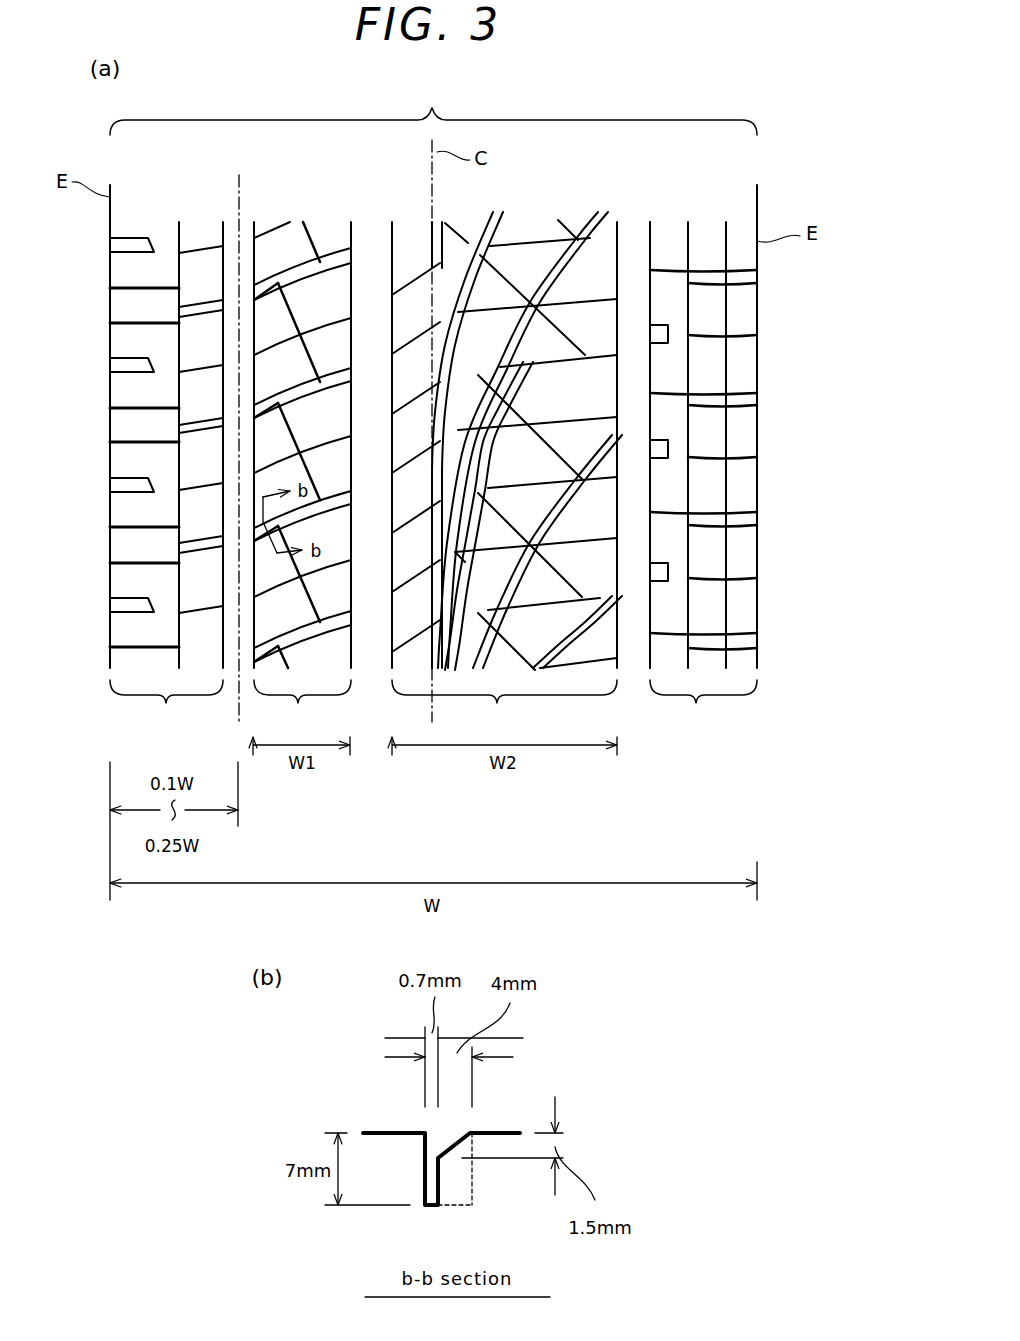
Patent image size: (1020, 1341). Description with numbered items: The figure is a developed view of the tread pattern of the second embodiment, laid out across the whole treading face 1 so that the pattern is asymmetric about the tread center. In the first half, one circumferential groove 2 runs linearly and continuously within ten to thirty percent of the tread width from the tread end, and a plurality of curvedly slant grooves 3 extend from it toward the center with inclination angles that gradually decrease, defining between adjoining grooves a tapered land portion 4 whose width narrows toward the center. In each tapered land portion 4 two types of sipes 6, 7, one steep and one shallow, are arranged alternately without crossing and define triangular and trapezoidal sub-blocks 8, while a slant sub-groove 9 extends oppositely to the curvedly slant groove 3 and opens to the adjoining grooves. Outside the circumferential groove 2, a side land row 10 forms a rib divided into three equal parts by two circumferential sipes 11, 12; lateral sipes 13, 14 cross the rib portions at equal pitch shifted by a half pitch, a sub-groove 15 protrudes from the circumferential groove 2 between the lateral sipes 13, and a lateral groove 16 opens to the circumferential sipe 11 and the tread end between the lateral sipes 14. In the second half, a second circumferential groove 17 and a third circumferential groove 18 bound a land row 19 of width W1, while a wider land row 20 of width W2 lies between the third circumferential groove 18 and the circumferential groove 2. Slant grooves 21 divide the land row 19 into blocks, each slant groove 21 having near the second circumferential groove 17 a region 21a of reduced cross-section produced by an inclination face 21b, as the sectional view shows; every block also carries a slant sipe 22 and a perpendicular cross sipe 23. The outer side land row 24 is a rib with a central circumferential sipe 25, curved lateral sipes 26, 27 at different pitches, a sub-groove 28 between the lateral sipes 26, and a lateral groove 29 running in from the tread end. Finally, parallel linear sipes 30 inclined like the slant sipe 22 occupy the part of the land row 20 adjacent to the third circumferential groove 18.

The treading face 1 is at (433, 107).
The circumferential groove 2 is at (633, 653).
The curvedly slant groove 3 is at (515, 327).
The tapered land portion 4 is at (597, 439).
The sipe 6 is at (601, 292).
The sipe 7 is at (587, 340).
The sub-block 8 is at (569, 294).
The slant sub-groove 9 is at (497, 268).
The side land row 10 is at (703, 705).
The circumferential sipe 11 is at (692, 240).
The circumferential sipe 12 is at (727, 227).
The lateral sipe 13 is at (672, 270).
The lateral sipe 14 is at (743, 335).
The sub-groove 15 is at (668, 332).
The lateral groove 16 is at (748, 277).
The second circumferential groove 17 is at (223, 234).
The third circumferential groove 18 is at (351, 234).
The land row 19 is at (302, 488).
The land row 20 is at (504, 488).
The slant groove 21 is at (309, 278).
The region 21a is at (261, 298).
The inclination face 21b is at (460, 1133).
The slant sipe 22 is at (338, 447).
The cross sipe 23 is at (288, 430).
The side land row 24 is at (166, 705).
The circumferential sipe 25 is at (179, 466).
The lateral sipe 26 is at (202, 372).
The lateral sipe 27 is at (110, 292).
The sub-groove 28 is at (202, 303).
The lateral groove 29 is at (110, 245).
The linear sipe 30 is at (412, 336).